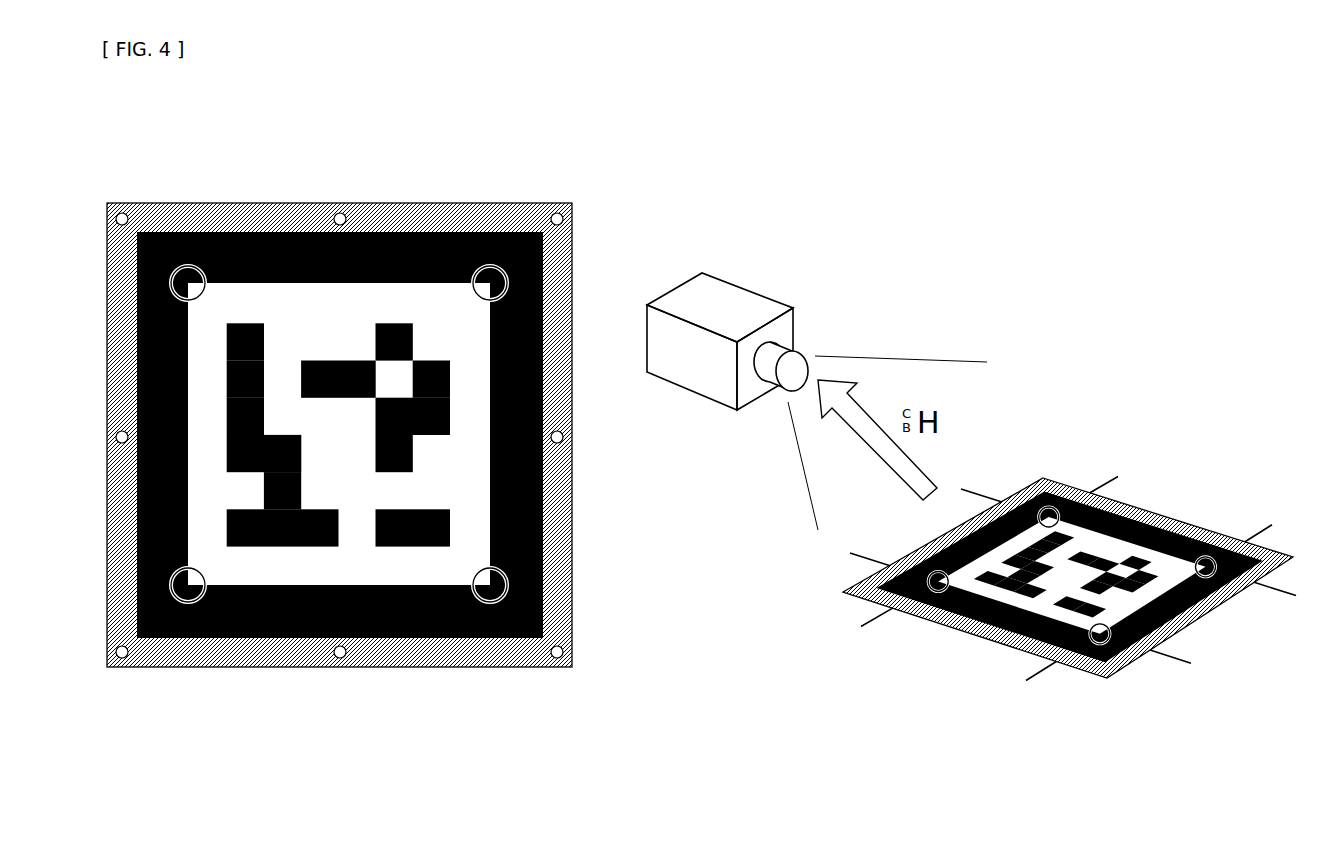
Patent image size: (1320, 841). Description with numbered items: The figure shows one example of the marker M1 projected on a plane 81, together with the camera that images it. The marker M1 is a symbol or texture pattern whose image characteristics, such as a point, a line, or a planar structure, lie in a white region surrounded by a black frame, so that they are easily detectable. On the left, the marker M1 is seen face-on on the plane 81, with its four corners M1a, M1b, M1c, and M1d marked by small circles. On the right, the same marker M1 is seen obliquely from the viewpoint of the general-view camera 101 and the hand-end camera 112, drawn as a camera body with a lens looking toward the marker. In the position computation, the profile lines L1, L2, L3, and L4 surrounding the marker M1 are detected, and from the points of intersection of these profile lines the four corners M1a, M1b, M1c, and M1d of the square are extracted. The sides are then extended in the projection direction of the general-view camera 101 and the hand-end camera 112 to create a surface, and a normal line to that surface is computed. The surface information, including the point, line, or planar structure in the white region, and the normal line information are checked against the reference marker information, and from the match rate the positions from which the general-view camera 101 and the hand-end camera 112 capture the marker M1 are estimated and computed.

The plane 81 is at (282, 203).
The marker M1 is at (518, 232).
The corner of the square M1a is at (185, 266).
The corner of the square M1b is at (484, 266).
The corner of the square M1c is at (190, 602).
The corner of the square M1d is at (490, 602).
The general-view camera 101 is at (817, 381).
The hand-end camera 112 is at (747, 290).
The profile line L1 is at (1097, 486).
The profile line L2 is at (975, 488).
The profile line L3 is at (876, 556).
The profile line L4 is at (1263, 533).